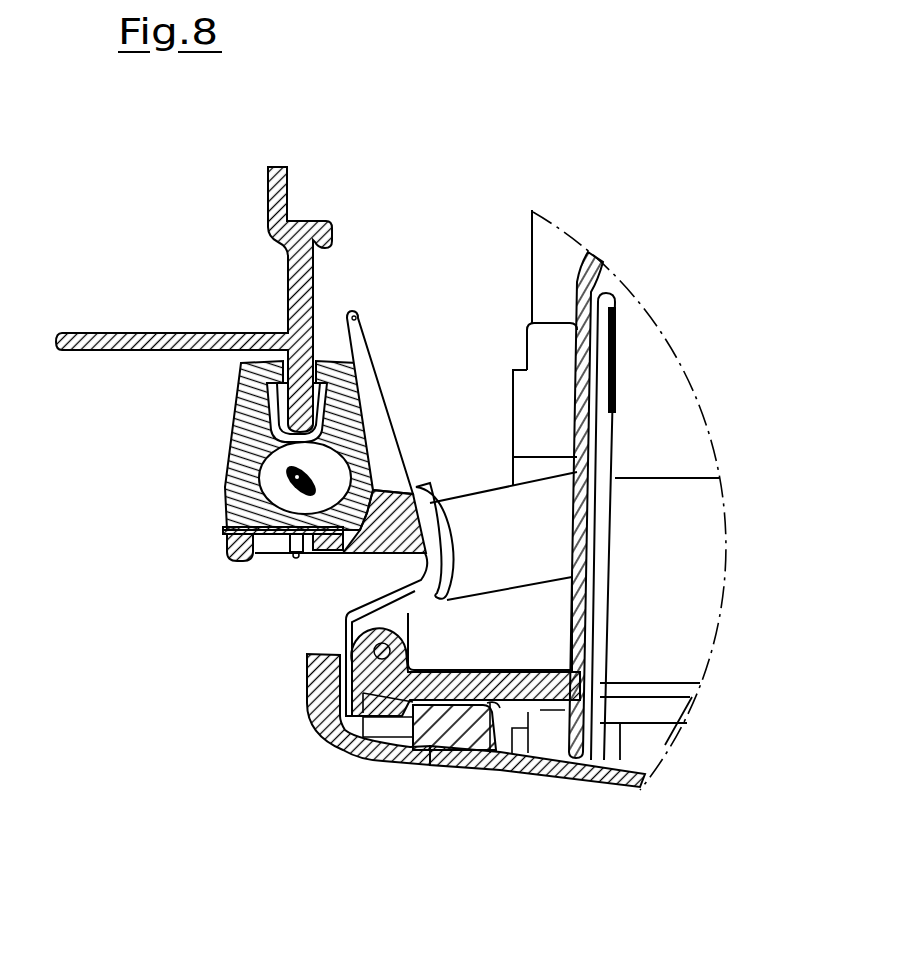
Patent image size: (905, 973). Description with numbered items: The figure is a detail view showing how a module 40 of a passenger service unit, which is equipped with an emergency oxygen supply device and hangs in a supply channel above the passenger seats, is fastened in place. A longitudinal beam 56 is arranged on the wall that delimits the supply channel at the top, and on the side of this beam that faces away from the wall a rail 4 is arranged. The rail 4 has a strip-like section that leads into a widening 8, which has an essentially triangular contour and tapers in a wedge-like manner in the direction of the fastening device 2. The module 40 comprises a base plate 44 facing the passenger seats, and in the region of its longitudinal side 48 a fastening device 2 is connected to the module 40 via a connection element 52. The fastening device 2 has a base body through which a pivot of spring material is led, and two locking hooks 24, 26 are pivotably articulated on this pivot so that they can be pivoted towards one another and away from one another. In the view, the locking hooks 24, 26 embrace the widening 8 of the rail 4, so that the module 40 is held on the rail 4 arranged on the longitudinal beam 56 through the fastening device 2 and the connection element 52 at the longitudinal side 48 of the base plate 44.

The fastening device 2 is at (220, 558).
The rail 4 is at (219, 257).
The widening 8 is at (232, 405).
The locking hook 24 is at (358, 385).
The locking hook 26 is at (232, 440).
The module 40 is at (526, 790).
The base plate 44 is at (467, 750).
The longitudinal side 48 is at (307, 733).
The connection element 52 is at (447, 547).
The longitudinal beam 56 is at (291, 189).